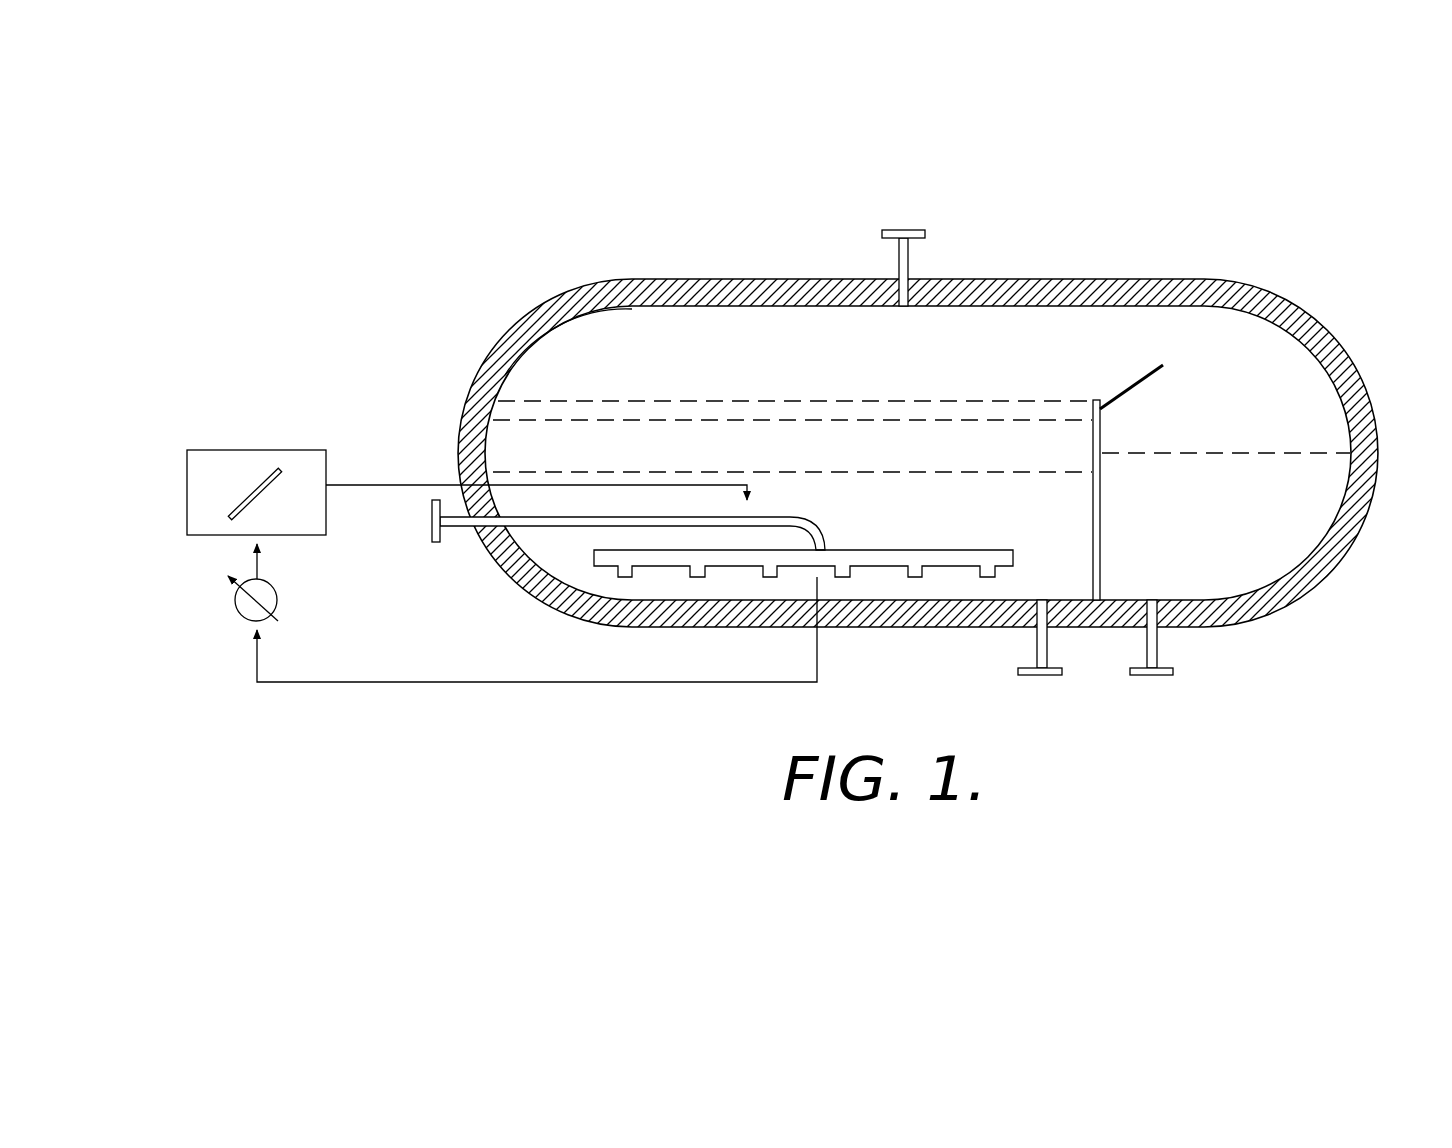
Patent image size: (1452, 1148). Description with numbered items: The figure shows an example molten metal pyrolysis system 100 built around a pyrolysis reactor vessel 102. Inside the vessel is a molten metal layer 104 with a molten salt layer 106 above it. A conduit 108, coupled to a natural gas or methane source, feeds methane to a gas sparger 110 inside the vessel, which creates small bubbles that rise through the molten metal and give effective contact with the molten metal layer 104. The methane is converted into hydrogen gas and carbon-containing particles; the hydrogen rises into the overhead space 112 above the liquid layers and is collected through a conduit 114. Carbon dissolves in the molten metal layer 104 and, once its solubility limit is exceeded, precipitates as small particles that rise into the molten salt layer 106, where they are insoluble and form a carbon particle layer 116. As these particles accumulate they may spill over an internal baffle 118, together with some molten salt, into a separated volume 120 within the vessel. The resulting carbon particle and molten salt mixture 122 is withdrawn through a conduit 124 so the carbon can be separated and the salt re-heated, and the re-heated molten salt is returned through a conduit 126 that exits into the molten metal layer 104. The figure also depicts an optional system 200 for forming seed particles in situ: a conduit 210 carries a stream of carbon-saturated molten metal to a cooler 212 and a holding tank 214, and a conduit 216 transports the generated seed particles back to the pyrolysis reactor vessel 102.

The molten metal pyrolysis system 100 is at (1380, 297).
The pyrolysis reactor vessel 102 is at (1360, 366).
The molten metal layer 104 is at (1075, 580).
The molten salt layer 106 is at (493, 442).
The conduit 108 is at (462, 528).
The gas sparger 110 is at (875, 567).
The overhead space 112 is at (635, 315).
The conduit 114 is at (911, 228).
The carbon particle layer 116 is at (515, 410).
The internal baffle 118 is at (1148, 374).
The separated volume 120 is at (1330, 449).
The carbon particle and molten salt mixture 122 is at (1300, 517).
The conduit 124 is at (1157, 653).
The conduit 126 is at (1037, 652).
The system for forming seed particles in situ 200 is at (177, 428).
The conduit 210 is at (620, 683).
The cooler 212 is at (236, 606).
The holding tank 214 is at (187, 509).
The conduit 216 is at (385, 484).